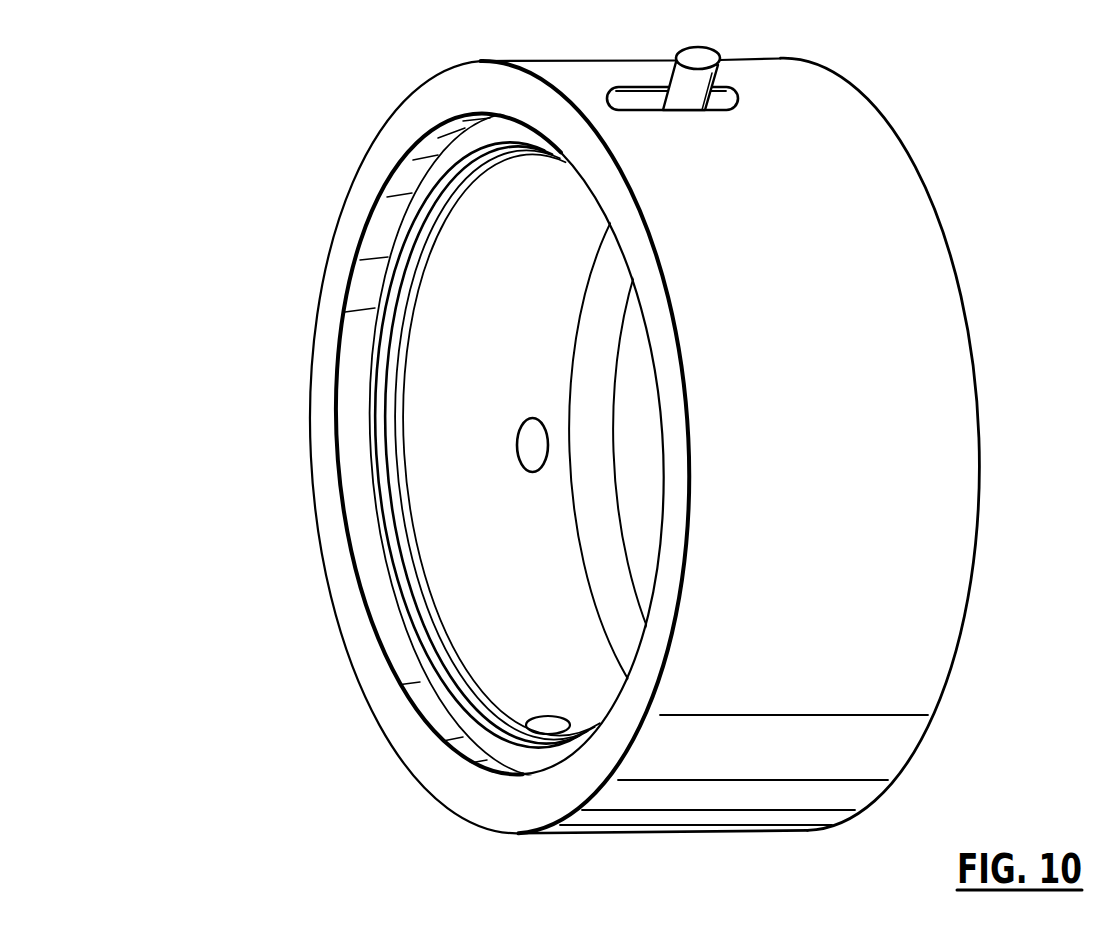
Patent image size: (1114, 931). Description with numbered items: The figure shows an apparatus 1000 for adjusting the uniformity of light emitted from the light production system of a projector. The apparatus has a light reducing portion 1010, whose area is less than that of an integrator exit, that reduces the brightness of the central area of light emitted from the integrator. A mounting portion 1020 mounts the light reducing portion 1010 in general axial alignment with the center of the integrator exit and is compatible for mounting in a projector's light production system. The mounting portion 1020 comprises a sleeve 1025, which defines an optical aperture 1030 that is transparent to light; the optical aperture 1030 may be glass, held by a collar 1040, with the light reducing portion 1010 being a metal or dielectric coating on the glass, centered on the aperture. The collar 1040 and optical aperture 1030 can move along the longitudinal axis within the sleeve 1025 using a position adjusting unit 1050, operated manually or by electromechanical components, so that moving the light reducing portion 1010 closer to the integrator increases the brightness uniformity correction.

The apparatus 1000 is at (348, 127).
The light reducing portion 1010 is at (528, 447).
The mounting portion 1020 is at (807, 236).
The sleeve 1025 is at (350, 455).
The optical aperture 1030 is at (555, 288).
The collar 1040 is at (405, 228).
The position adjusting unit 1050 is at (698, 83).